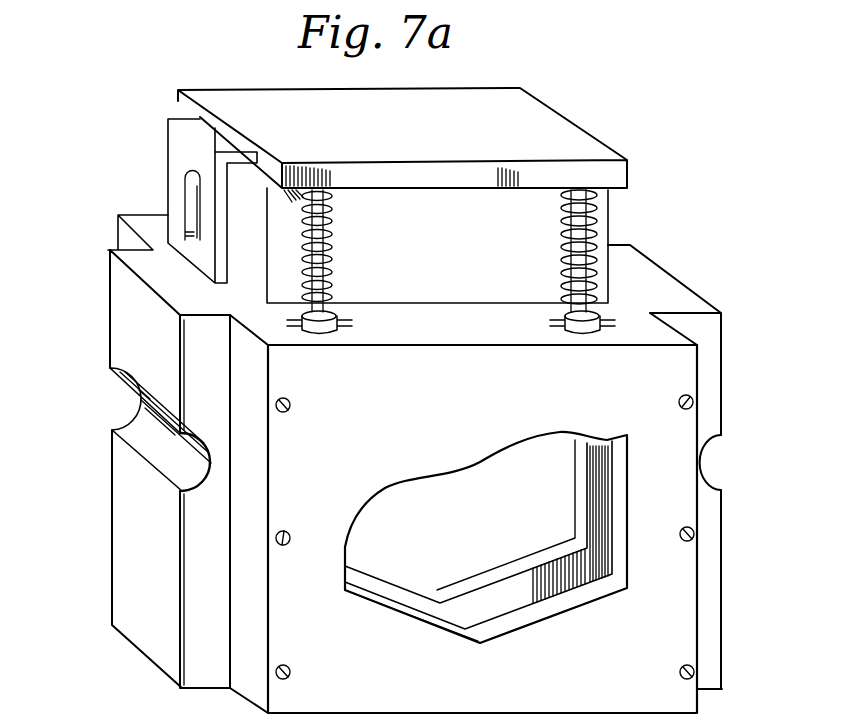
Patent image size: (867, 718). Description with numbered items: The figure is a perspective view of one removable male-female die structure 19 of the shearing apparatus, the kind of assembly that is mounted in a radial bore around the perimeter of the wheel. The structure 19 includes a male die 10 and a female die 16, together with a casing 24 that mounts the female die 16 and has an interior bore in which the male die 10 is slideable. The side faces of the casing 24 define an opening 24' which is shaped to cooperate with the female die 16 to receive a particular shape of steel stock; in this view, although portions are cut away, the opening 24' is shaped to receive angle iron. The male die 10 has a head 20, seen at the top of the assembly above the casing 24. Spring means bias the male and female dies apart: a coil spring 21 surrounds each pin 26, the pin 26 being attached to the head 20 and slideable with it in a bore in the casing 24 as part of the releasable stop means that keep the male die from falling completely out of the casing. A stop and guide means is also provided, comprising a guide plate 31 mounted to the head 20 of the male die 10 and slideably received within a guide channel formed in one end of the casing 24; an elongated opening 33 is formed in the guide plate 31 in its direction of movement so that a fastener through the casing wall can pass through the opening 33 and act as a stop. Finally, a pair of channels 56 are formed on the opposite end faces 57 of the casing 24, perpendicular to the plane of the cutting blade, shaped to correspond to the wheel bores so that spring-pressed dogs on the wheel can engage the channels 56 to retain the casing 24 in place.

The male die 10 is at (240, 288).
The female die 16 is at (540, 555).
The male-female die structure 19 is at (762, 278).
The head 20 is at (567, 128).
The coil spring 21 is at (330, 248).
The casing 24 is at (506, 513).
The opening 24' is at (396, 632).
The pin 26 is at (323, 232).
The guide plate 31 is at (177, 155).
The elongated opening 33 is at (195, 204).
The channel 56 is at (143, 440).
The end face 57 is at (248, 603).